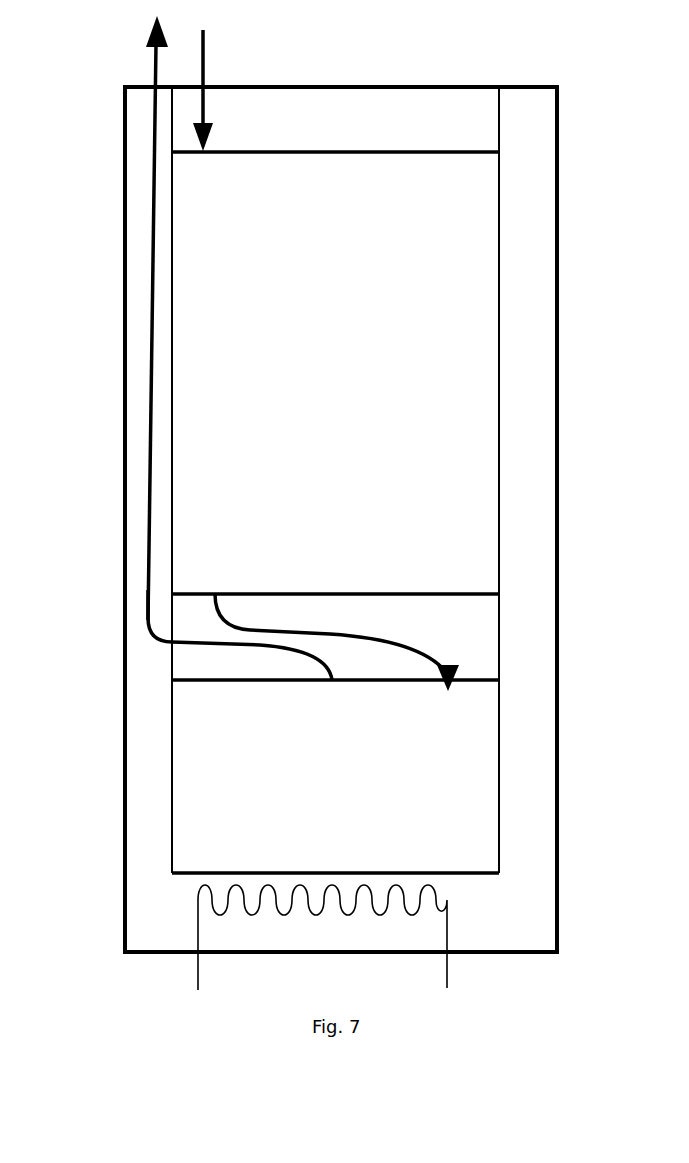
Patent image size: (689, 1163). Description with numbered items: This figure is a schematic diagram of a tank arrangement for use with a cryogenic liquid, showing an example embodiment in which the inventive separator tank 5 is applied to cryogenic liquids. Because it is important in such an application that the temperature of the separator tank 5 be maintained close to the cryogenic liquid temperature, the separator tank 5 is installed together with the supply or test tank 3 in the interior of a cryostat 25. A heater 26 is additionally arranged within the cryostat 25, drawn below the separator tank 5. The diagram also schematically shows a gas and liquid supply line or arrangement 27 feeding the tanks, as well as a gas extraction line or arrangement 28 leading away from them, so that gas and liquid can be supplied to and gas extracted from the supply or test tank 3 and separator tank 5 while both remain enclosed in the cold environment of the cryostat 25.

The supply or test tank 3 is at (227, 447).
The separator tank 5 is at (303, 783).
The cryostat 25 is at (123, 627).
The heater 26 is at (213, 903).
The gas and liquid supply line or arrangement 27 is at (408, 650).
The gas extraction line or arrangement 28 is at (272, 650).